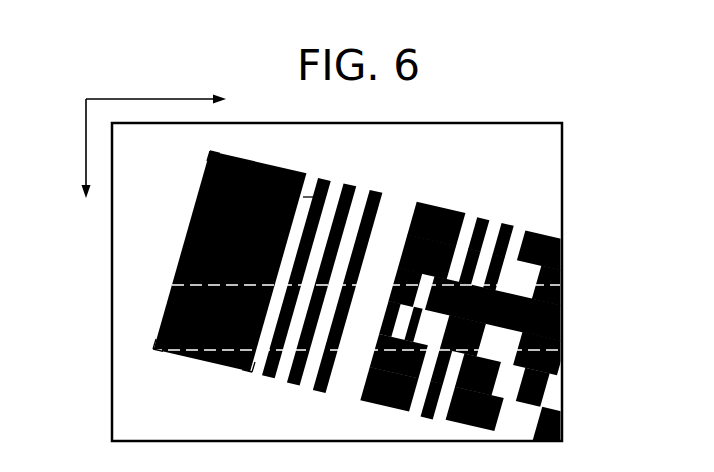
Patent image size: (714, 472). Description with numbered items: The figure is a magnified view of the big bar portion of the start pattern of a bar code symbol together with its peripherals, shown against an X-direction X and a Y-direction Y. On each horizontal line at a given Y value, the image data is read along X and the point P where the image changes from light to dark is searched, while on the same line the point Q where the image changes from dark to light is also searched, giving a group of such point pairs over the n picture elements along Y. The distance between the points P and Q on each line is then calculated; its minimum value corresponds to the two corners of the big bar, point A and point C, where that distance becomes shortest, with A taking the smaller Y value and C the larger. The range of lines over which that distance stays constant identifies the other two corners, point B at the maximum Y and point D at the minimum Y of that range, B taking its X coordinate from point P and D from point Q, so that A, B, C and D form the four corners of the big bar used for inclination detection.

The point A is at (211, 143).
The point B is at (147, 352).
The point C is at (249, 382).
The point D is at (307, 172).
The point P is at (196, 197).
The point Q is at (303, 198).
The X-direction X is at (156, 87).
The Y-direction Y is at (72, 148).